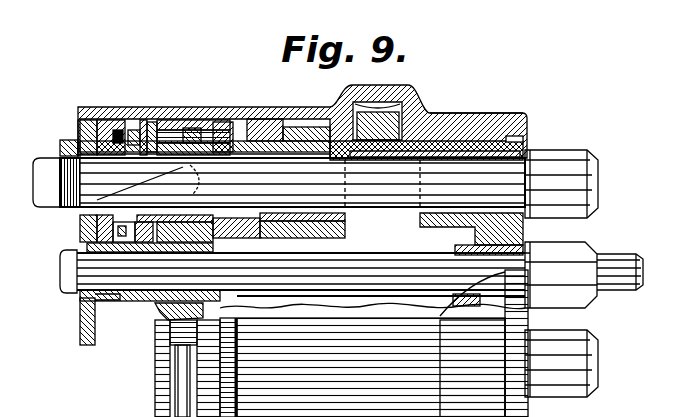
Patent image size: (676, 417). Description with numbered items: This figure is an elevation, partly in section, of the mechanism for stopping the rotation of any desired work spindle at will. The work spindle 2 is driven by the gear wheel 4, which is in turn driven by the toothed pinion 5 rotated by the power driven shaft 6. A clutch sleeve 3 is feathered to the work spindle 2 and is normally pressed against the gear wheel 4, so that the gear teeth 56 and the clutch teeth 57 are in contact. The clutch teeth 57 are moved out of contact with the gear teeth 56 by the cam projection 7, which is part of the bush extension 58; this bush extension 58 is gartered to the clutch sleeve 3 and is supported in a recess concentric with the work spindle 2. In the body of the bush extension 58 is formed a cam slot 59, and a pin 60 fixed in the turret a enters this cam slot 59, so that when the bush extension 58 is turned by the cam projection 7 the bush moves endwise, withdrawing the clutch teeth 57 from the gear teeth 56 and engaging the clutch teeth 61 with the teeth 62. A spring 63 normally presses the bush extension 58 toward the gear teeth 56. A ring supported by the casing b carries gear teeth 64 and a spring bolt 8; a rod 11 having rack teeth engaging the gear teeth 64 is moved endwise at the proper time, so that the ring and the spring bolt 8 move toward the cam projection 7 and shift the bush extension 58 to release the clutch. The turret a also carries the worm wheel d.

The work spindle 2 is at (597, 164).
The clutch sleeve 3 is at (246, 128).
The gear wheel 4 is at (79, 126).
The toothed pinion 5 is at (110, 306).
The power driven shaft 6 is at (619, 257).
The cam projection 7 is at (146, 122).
The spring bolt 8 is at (165, 138).
The rod 11 is at (176, 379).
The gear teeth 56 is at (105, 128).
The clutch teeth 57 is at (148, 140).
The bush extension 58 is at (185, 138).
The cam slot 59 is at (66, 221).
The pin 60 is at (222, 130).
The clutch teeth 61 is at (255, 137).
The teeth 62 is at (278, 140).
The spring 63 is at (270, 239).
The gear teeth 64 is at (172, 333).
The turret a is at (528, 137).
The casing b is at (463, 120).
The worm wheel d is at (395, 128).